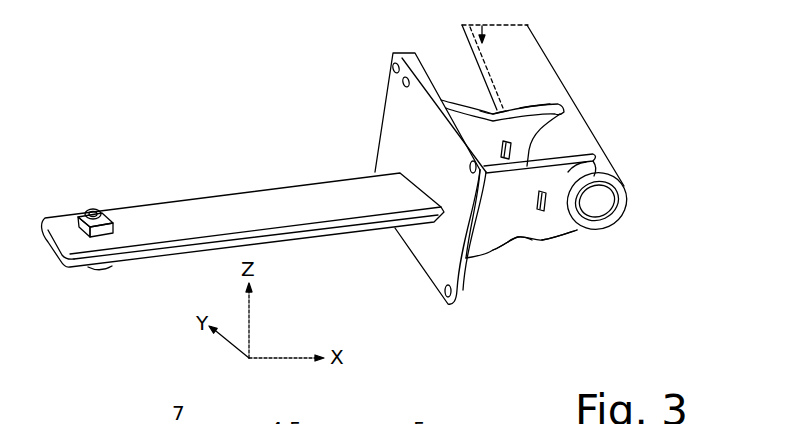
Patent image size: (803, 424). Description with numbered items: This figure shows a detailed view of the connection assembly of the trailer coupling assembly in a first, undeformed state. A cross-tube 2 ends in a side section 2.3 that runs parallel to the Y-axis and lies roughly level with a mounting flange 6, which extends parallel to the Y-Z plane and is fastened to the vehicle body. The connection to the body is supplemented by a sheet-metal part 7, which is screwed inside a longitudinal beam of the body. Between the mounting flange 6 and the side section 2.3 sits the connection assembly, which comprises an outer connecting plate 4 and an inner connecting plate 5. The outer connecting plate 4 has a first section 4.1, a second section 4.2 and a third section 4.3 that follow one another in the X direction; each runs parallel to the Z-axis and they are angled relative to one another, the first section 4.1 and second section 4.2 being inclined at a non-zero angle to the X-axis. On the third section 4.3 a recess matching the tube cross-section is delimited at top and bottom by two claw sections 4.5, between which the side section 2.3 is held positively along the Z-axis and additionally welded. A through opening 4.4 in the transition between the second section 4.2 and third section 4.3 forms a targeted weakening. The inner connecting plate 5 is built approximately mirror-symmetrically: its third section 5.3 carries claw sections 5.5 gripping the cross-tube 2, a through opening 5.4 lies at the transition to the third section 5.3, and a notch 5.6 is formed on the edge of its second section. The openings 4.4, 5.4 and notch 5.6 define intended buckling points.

The cross-tube 2 is at (540, 48).
The side section 2.3 is at (636, 208).
The outer connecting plate 4 is at (575, 254).
The first section 4.1 is at (477, 268).
The second section 4.2 is at (525, 264).
The third section 4.3 is at (563, 254).
The through opening 4.4 is at (538, 223).
The claw sections 4.5 is at (608, 156).
The inner connecting plate 5 is at (537, 83).
The third section 5.3 is at (533, 99).
The through opening 5.4 is at (513, 148).
The claw sections 5.5 is at (576, 107).
The notch 5.6 is at (487, 100).
The mounting flange 6 is at (381, 131).
The sheet-metal part 7 is at (202, 207).